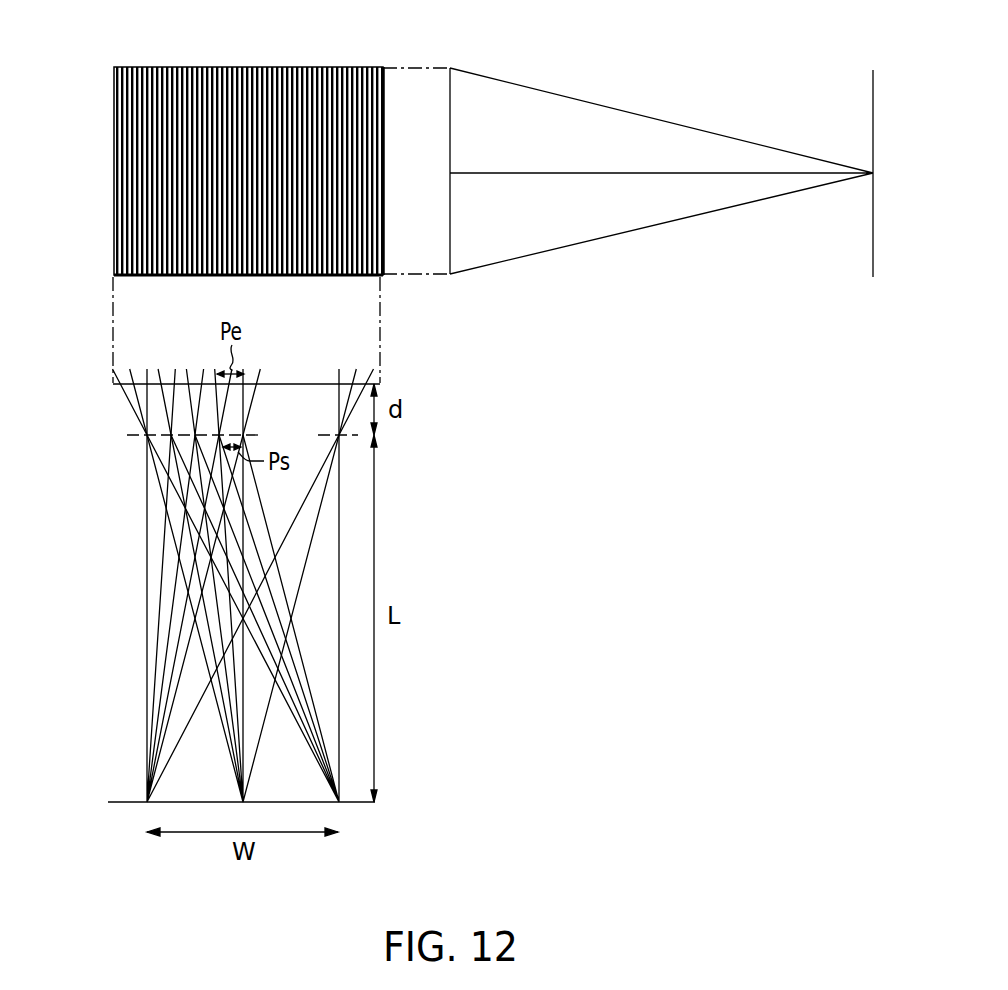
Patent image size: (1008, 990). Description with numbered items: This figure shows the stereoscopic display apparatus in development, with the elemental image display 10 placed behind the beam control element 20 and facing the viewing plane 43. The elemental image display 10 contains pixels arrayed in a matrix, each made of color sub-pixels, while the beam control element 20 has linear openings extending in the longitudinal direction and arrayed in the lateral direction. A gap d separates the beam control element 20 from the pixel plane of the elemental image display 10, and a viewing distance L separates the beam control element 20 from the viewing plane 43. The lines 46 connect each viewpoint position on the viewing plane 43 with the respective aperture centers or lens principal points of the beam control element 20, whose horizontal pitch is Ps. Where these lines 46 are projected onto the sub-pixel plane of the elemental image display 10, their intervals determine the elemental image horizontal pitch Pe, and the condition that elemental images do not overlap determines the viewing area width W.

The elemental image display 10 is at (113, 157).
The beam control element 20 is at (127, 436).
The viewing plane 43 is at (872, 282).
The line connecting the viewpoint position and the aperture centers 46 is at (674, 120).